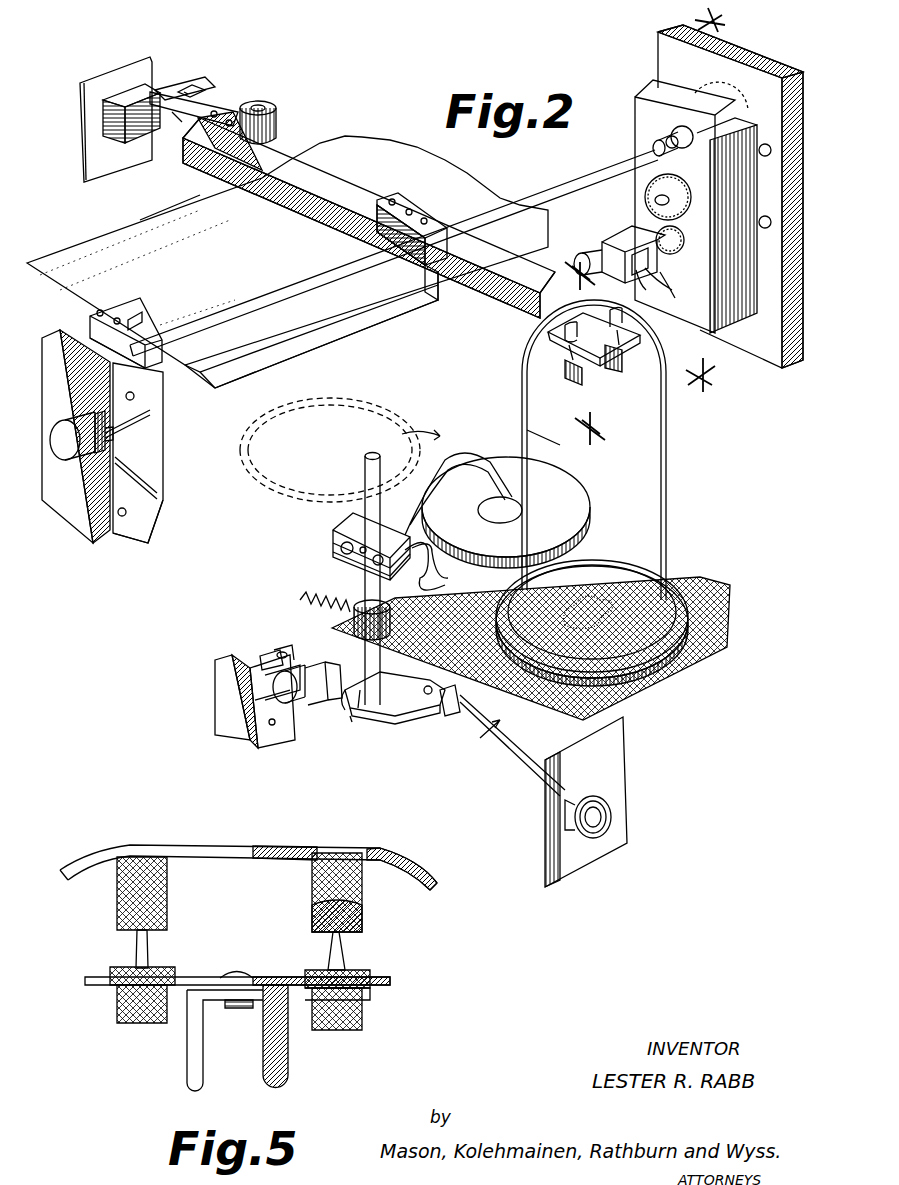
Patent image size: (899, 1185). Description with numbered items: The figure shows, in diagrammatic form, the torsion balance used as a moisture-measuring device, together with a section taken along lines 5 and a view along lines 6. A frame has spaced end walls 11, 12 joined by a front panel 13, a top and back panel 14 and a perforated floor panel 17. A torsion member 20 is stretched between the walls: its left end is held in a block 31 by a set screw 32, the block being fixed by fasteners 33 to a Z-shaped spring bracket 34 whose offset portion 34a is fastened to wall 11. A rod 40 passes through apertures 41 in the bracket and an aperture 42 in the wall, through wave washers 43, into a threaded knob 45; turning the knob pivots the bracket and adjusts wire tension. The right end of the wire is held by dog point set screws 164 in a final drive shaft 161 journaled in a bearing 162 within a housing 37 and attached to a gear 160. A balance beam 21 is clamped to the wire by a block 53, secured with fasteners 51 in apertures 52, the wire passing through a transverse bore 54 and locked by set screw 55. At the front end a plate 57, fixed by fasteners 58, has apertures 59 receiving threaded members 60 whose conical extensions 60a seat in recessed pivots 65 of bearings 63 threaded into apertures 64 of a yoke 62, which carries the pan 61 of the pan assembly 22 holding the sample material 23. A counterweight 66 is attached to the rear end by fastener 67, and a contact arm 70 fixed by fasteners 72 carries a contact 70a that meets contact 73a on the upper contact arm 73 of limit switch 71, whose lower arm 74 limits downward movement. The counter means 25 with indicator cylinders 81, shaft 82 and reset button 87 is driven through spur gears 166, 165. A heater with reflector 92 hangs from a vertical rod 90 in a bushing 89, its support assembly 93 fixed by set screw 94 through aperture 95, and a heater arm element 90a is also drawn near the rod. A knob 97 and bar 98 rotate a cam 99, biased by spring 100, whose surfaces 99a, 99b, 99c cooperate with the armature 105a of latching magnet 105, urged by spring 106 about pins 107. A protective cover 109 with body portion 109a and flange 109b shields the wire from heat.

In FIG. 2, the end wall 11 is at (75, 512).
In FIG. 2, the end wall 12 is at (772, 40).
In FIG. 2, the front panel 13 is at (615, 765).
In FIG. 2, the top and back panel 14 is at (96, 148).
In FIG. 2, the perforated floor panel 17 is at (712, 648).
In FIG. 2, the torsion member 20 is at (293, 290).
In FIG. 2, the balance beam 21 is at (352, 166).
In FIG. 5, the balance beam 21 is at (288, 1078).
In FIG. 2, the pan assembly 22 is at (667, 418).
In FIG. 5, the pan assembly 22 is at (435, 870).
In FIG. 2, the material 23 is at (612, 600).
In FIG. 2, the rotational counter means 25 is at (625, 230).
In FIG. 2, the block 31 is at (92, 320).
In FIG. 2, the set screw 32 is at (140, 324).
In FIG. 2, the fasteners 33 is at (102, 311).
In FIG. 2, the spring bracket 34 is at (165, 432).
In FIG. 2, the offset portion 34a is at (148, 528).
In FIG. 2, the housing 37 is at (640, 106).
In FIG. 2, the rod 40 is at (125, 420).
In FIG. 2, the apertures 41 is at (134, 396).
In FIG. 2, the aperture 42 is at (108, 420).
In FIG. 2, the wave washers 43 is at (92, 412).
In FIG. 2, the knob 45 is at (80, 462).
In FIG. 2, the section line 5 is at (582, 353).
In FIG. 2, the section line 6 is at (712, 206).
In FIG. 2, the fasteners 51 is at (410, 209).
In FIG. 2, the apertures 52 is at (390, 199).
In FIG. 2, the block 53 is at (426, 218).
In FIG. 2, the transverse bore 54 is at (425, 278).
In FIG. 2, the set screw 55 is at (436, 225).
In FIG. 2, the plate 57 is at (585, 362).
In FIG. 5, the plate 57 is at (205, 978).
In FIG. 5, the fasteners 58 is at (236, 1008).
In FIG. 5, the apertures 59 is at (365, 1000).
In FIG. 2, the threaded members 60 is at (618, 368).
In FIG. 5, the threaded members 60 is at (140, 1025).
In FIG. 2, the conical pivotal extensions 60a is at (570, 365).
In FIG. 5, the conical pivotal extensions 60a is at (136, 945).
In FIG. 2, the pan 61 is at (610, 572).
In FIG. 2, the yoke 62 is at (560, 440).
In FIG. 2, the pivoted bearings 63 is at (610, 312).
In FIG. 5, the pivoted bearings 63 is at (190, 898).
In FIG. 5, the aperture 64 is at (318, 848).
In FIG. 5, the conically recessed pivots 65 is at (318, 930).
In FIG. 2, the counterweight 66 is at (277, 128).
In FIG. 2, the fastener 67 is at (283, 92).
In FIG. 2, the contact arm 70 is at (198, 128).
In FIG. 2, the contact 70a is at (178, 92).
In FIG. 2, the limit switch 71 is at (125, 96).
In FIG. 2, the fasteners 72 is at (225, 112).
In FIG. 2, the upper contact arm 73 is at (163, 88).
In FIG. 2, the contact 73a is at (195, 86).
In FIG. 2, the lower arm 74 is at (174, 118).
In FIG. 2, the indicator cylinders 81 is at (655, 281).
In FIG. 2, the shaft 82 is at (671, 287).
In FIG. 2, the reset button 87 is at (590, 258).
In FIG. 2, the bushing 89 is at (395, 602).
In FIG. 2, the vertical rod 90 is at (364, 468).
In FIG. 2, the cam arm 90a is at (425, 508).
In FIG. 2, the heat reflector 92 is at (566, 482).
In FIG. 2, the support assembly 93 is at (345, 525).
In FIG. 2, the set screw 94 is at (366, 566).
In FIG. 2, the aperture 95 is at (350, 558).
In FIG. 2, the knob 97 is at (612, 805).
In FIG. 2, the bar 98 is at (495, 752).
In FIG. 2, the cam 99 is at (405, 712).
In FIG. 2, the camming surface 99a is at (352, 728).
In FIG. 2, the latching surface 99b is at (368, 722).
In FIG. 2, the surface 99c is at (365, 738).
In FIG. 2, the spring 100 is at (300, 600).
In FIG. 2, the latching magnet 105 is at (270, 730).
In FIG. 2, the latching armature 105a is at (318, 680).
In FIG. 2, the spring 106 is at (266, 655).
In FIG. 2, the pins 107 is at (288, 650).
In FIG. 2, the protective cover 109 is at (240, 350).
In FIG. 2, the body portion 109a is at (160, 222).
In FIG. 2, the flange 109b is at (380, 305).
In FIG. 2, the gear 160 is at (712, 92).
In FIG. 2, the final drive shaft 161 is at (670, 136).
In FIG. 2, the bearing 162 is at (681, 126).
In FIG. 2, the dog point set screws 164 is at (652, 146).
In FIG. 2, the spur gear 165 is at (650, 190).
In FIG. 2, the spur gear 166 is at (684, 248).